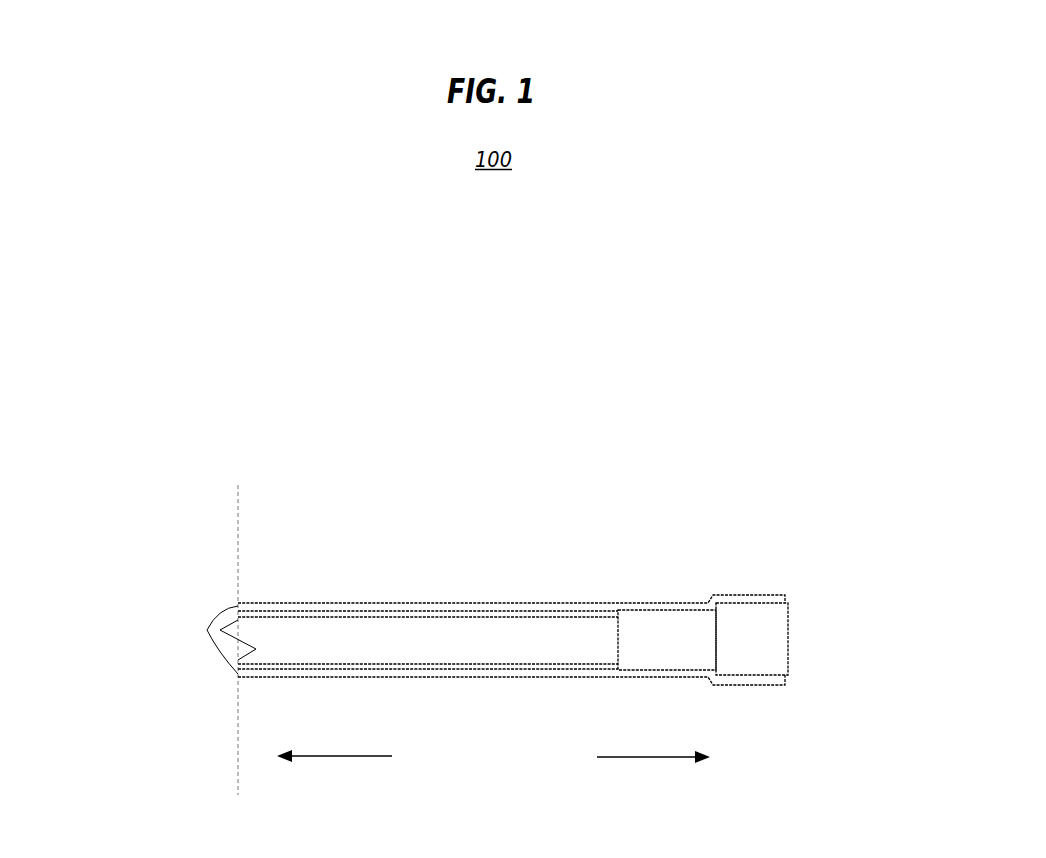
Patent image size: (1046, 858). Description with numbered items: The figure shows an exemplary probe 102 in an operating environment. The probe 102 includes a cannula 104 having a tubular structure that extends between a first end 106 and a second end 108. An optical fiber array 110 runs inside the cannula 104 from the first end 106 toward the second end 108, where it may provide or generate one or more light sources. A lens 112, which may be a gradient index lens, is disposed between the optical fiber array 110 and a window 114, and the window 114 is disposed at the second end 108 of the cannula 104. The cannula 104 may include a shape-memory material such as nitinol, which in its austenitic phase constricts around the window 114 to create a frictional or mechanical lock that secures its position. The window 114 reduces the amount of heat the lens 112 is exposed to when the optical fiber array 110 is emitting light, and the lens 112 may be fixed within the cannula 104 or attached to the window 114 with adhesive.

The probe 102 is at (347, 390).
The cannula 104 is at (206, 630).
The first end 106 is at (330, 758).
The second end 108 is at (633, 759).
The optical fiber array 110 is at (361, 617).
The lens 112 is at (646, 670).
The window 114 is at (788, 627).